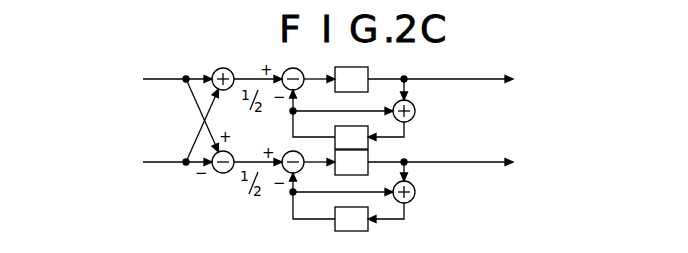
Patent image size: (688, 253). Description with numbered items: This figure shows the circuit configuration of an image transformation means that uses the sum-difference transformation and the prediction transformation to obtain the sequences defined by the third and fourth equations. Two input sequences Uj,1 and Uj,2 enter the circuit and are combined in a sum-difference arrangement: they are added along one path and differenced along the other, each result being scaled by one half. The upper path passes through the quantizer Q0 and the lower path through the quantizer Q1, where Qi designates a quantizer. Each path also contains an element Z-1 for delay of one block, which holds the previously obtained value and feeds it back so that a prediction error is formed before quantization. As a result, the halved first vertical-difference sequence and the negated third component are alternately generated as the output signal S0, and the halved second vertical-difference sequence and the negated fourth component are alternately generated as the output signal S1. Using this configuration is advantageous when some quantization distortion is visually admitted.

The first input signal Uj,1 is at (154, 78).
The second input signal Uj,2 is at (154, 161).
The quantizer Q0 is at (351, 79).
The quantizer Q1 is at (351, 162).
The element for delay of one block Z-1 is at (351, 178).
The output signal S0 is at (466, 80).
The output signal S1 is at (466, 163).